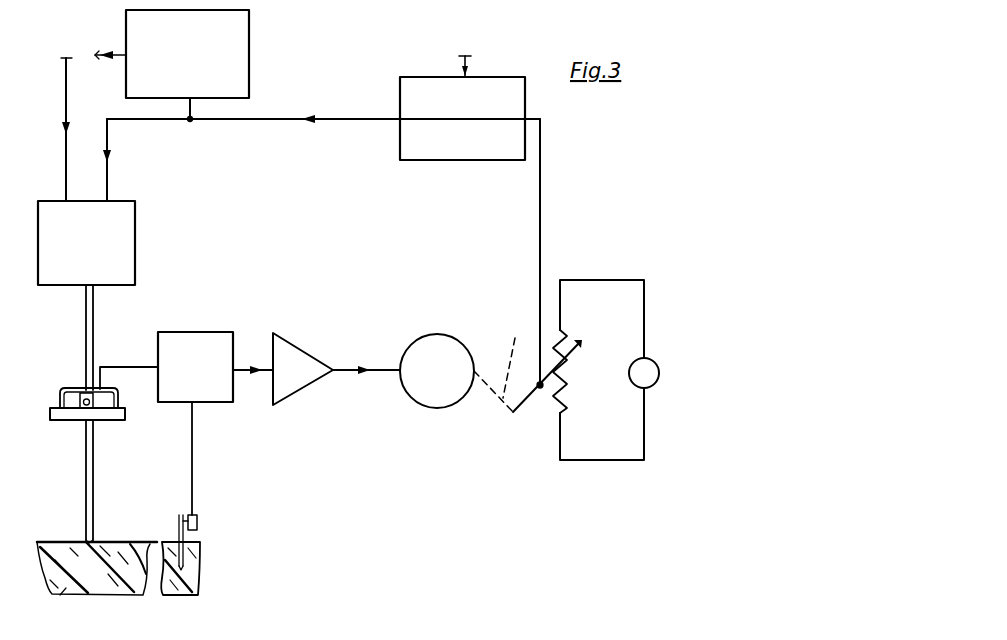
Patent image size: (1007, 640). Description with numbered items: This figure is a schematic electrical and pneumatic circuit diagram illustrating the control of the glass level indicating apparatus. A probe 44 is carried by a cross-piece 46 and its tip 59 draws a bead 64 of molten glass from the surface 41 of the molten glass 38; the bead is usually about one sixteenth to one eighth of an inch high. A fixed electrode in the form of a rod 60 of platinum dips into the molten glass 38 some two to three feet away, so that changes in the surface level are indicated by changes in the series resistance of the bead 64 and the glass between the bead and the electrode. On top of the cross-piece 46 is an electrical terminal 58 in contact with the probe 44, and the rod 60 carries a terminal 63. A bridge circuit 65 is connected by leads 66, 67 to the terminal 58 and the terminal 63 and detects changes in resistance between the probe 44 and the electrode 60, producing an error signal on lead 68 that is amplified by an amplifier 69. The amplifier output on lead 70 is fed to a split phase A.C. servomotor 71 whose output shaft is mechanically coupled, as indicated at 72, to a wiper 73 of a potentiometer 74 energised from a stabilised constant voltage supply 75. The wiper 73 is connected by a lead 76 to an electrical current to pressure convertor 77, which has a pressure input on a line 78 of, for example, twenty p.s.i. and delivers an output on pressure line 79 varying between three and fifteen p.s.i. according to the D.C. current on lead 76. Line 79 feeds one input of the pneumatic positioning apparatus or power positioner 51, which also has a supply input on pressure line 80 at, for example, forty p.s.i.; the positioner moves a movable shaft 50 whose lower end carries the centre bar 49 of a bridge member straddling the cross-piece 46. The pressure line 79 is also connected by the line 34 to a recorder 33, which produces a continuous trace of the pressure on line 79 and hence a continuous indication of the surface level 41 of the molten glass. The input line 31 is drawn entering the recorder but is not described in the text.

The input signal 31 is at (110, 45).
The recorder 33 is at (238, 70).
The line 34 is at (193, 108).
The molten glass 38 is at (92, 592).
The surface 41 is at (43, 541).
The probe 44 is at (93, 447).
The cross-piece 46 is at (63, 420).
The centre bar 49 is at (87, 391).
The movable shaft 50 is at (93, 308).
The pneumatic positioning apparatus 51 is at (118, 232).
The electrical terminal 58 is at (79, 396).
The tip 59 is at (91, 540).
The rod 60 is at (178, 541).
The terminal 63 is at (197, 522).
The bead 64 is at (85, 540).
The bridge circuit 65 is at (200, 397).
The lead 66 is at (138, 366).
The lead 67 is at (190, 432).
The lead 68 is at (243, 368).
The amplifier 69 is at (300, 356).
The lead 70 is at (387, 368).
The split phase A.C. servomotor 71 is at (463, 362).
The mechanical coupling 72 is at (504, 364).
The wiper 73 is at (528, 397).
The potentiometer 74 is at (562, 403).
The stabilised constant voltage supply 75 is at (629, 375).
The lead 76 is at (542, 207).
The electrical current to pressure convertor 77 is at (435, 96).
The pressure input line 78 is at (471, 62).
The pressure line 79 is at (351, 119).
The pressure line 80 is at (68, 105).